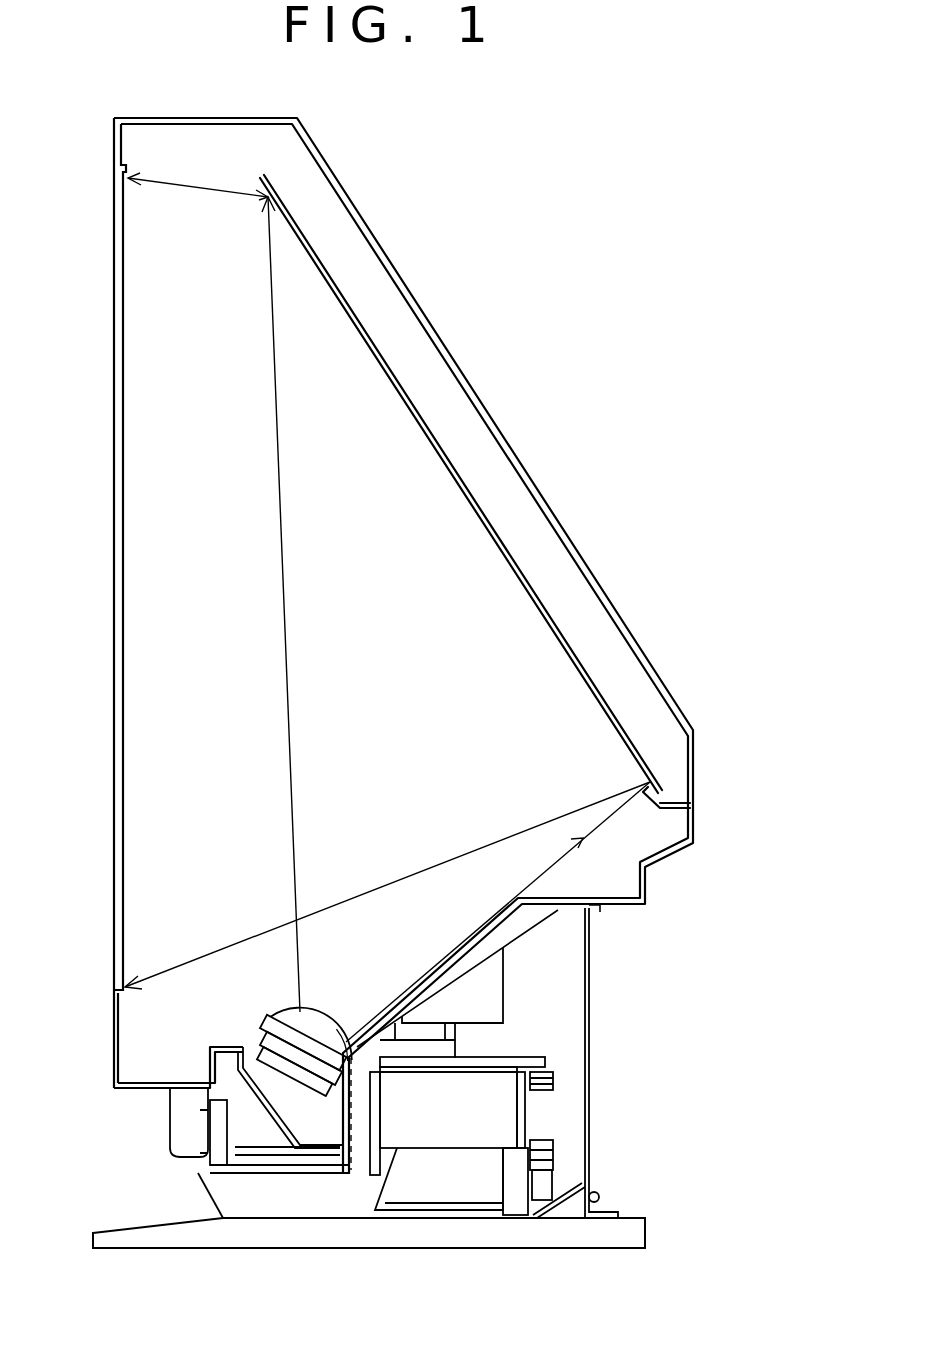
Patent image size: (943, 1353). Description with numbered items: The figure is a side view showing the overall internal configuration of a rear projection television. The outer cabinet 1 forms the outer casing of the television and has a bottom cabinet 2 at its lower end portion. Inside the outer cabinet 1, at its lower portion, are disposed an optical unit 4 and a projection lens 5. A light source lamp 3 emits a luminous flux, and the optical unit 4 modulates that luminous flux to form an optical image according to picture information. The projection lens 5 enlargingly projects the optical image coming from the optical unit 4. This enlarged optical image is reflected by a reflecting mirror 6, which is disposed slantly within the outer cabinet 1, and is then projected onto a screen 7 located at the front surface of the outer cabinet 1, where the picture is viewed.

The outer cabinet 1 is at (493, 413).
The bottom cabinet 2 is at (122, 1228).
The light source lamp 3 is at (254, 1120).
The optical unit 4 is at (520, 1112).
The projection lens 5 is at (331, 1014).
The reflecting mirror 6 is at (505, 541).
The screen 7 is at (110, 472).